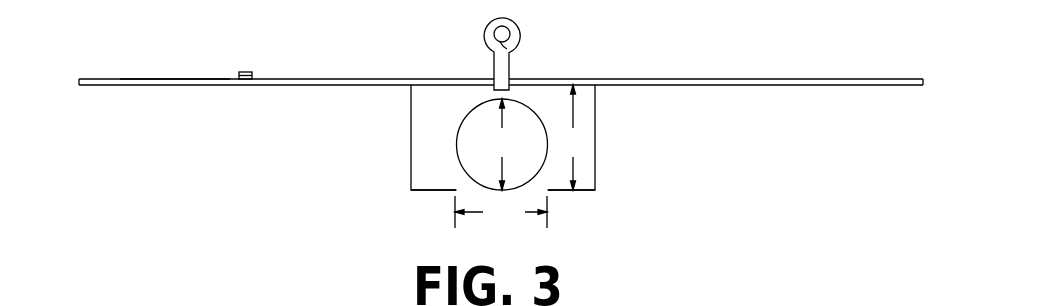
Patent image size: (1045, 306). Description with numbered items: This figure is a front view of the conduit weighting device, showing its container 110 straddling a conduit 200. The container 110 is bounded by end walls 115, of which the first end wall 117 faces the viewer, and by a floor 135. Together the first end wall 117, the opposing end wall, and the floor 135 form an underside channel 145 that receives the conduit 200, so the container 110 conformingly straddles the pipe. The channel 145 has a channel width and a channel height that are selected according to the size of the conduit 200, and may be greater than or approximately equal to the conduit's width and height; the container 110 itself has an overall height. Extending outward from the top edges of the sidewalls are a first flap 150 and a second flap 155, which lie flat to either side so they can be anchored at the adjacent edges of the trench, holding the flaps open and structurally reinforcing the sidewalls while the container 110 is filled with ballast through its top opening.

The container 110 is at (500, 137).
The end walls 115 is at (411, 137).
The first end wall 117 is at (433, 135).
The floor 135 is at (433, 192).
The underside channel 145 is at (538, 182).
The first flap 150 is at (848, 79).
The second flap 155 is at (167, 79).
The conduit 200 is at (523, 110).